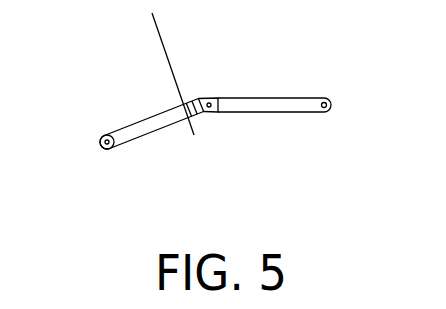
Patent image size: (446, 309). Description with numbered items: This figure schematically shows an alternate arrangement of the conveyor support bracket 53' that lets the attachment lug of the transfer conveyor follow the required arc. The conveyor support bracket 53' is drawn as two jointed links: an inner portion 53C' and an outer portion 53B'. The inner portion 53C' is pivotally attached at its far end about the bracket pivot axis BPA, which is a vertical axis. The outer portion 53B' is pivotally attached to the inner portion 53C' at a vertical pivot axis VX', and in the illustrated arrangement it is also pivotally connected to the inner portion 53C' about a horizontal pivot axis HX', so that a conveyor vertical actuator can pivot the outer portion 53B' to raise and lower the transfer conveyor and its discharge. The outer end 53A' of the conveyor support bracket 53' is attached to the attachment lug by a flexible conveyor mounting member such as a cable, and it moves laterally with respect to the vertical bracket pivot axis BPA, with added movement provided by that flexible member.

The horizontal pivot axis HX' is at (135, 72).
The vertical pivot axis VX' is at (208, 73).
The conveyor support bracket 53' is at (222, 181).
The outer end 53A' is at (83, 114).
The outer portion 53B' is at (158, 137).
The inner portion 53C' is at (274, 81).
The bracket pivot axis BPA is at (325, 113).